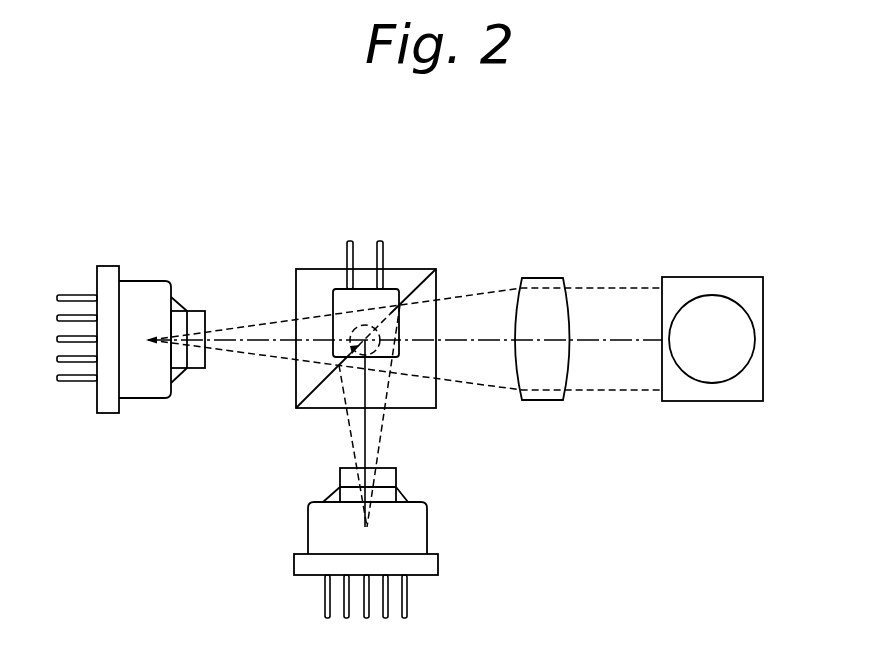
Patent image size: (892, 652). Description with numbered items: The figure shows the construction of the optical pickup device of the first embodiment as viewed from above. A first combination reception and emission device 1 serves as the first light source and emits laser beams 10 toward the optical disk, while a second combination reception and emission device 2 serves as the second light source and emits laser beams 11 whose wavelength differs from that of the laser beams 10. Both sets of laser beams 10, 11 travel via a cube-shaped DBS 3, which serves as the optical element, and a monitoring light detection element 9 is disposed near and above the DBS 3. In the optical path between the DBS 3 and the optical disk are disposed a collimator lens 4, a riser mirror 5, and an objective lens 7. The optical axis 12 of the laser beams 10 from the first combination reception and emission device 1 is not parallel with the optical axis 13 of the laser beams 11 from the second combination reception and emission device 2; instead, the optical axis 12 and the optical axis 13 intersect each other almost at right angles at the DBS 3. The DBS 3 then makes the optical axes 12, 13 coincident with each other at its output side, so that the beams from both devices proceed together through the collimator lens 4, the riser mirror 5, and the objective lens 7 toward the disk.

The first combination reception and emission device 1 is at (143, 398).
The second combination reception and emission device 2 is at (427, 528).
The DBS 3 is at (408, 269).
The collimator lens 4 is at (543, 278).
The riser mirror 5 is at (710, 277).
The objective lens 7 is at (735, 337).
The monitoring light detection element 9 is at (342, 288).
The laser beams 10 is at (270, 357).
The laser beams 11 is at (380, 447).
The optical axis 12 is at (227, 341).
The optical axis 13 is at (368, 424).